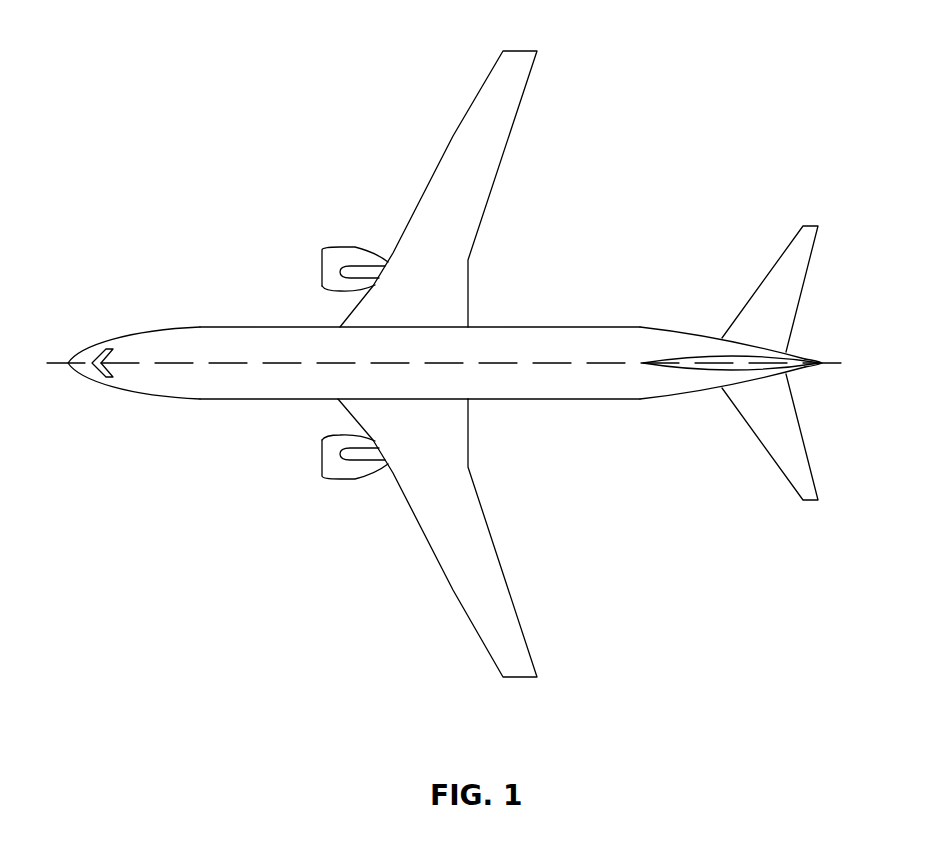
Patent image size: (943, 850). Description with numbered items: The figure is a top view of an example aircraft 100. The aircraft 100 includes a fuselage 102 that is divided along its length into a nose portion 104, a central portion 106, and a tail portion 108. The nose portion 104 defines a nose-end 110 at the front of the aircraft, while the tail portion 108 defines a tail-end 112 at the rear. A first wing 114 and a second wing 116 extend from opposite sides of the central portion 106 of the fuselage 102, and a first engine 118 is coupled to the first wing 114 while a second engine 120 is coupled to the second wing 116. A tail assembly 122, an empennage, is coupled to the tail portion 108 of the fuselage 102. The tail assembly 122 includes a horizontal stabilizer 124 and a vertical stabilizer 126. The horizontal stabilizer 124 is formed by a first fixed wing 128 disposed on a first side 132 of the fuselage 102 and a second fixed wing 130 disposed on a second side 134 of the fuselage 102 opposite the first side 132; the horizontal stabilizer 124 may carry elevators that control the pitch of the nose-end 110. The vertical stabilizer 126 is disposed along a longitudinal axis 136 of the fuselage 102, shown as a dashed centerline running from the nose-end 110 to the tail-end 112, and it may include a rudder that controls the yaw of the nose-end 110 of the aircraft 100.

The aircraft 100 is at (160, 112).
The fuselage 102 is at (430, 356).
The nose portion 104 is at (127, 319).
The central portion 106 is at (268, 409).
The tail portion 108 is at (685, 400).
The nose-end 110 is at (68, 361).
The tail-end 112 is at (822, 362).
The first wing 114 is at (447, 148).
The second wing 116 is at (455, 590).
The first engine 118 is at (344, 248).
The second engine 120 is at (344, 478).
The tail assembly 122 is at (750, 270).
The horizontal stabilizer 124 is at (750, 300).
The vertical stabilizer 126 is at (666, 357).
The first fixed wing 128 is at (788, 339).
The second fixed wing 130 is at (791, 407).
The first side 132 is at (553, 326).
The second side 134 is at (553, 400).
The longitudinal axis 136 is at (58, 366).